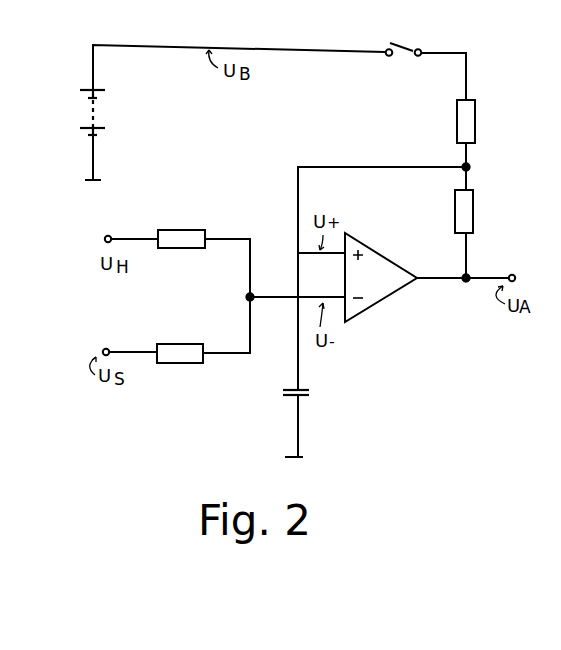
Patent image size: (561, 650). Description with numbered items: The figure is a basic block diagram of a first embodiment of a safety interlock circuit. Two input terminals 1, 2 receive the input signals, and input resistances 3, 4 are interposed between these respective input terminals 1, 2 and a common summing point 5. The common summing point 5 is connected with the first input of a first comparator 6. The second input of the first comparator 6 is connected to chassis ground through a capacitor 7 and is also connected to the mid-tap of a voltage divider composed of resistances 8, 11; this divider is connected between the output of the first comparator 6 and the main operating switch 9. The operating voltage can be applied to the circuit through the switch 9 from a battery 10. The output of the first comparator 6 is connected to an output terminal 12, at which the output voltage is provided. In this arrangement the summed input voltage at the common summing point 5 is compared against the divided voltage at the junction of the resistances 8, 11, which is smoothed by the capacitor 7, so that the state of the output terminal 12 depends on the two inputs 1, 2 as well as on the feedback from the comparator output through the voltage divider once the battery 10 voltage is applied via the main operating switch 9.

The input terminal 1 is at (105, 236).
The input terminal 2 is at (106, 348).
The input resistance 3 is at (177, 232).
The input resistance 4 is at (170, 345).
The common summing point 5 is at (248, 295).
The first comparator 6 is at (380, 262).
The capacitor 7 is at (313, 393).
The resistance 8 is at (464, 125).
The main operating switch 9 is at (404, 56).
The battery 10 is at (95, 113).
The resistance 11 is at (475, 215).
The output terminal 12 is at (516, 276).